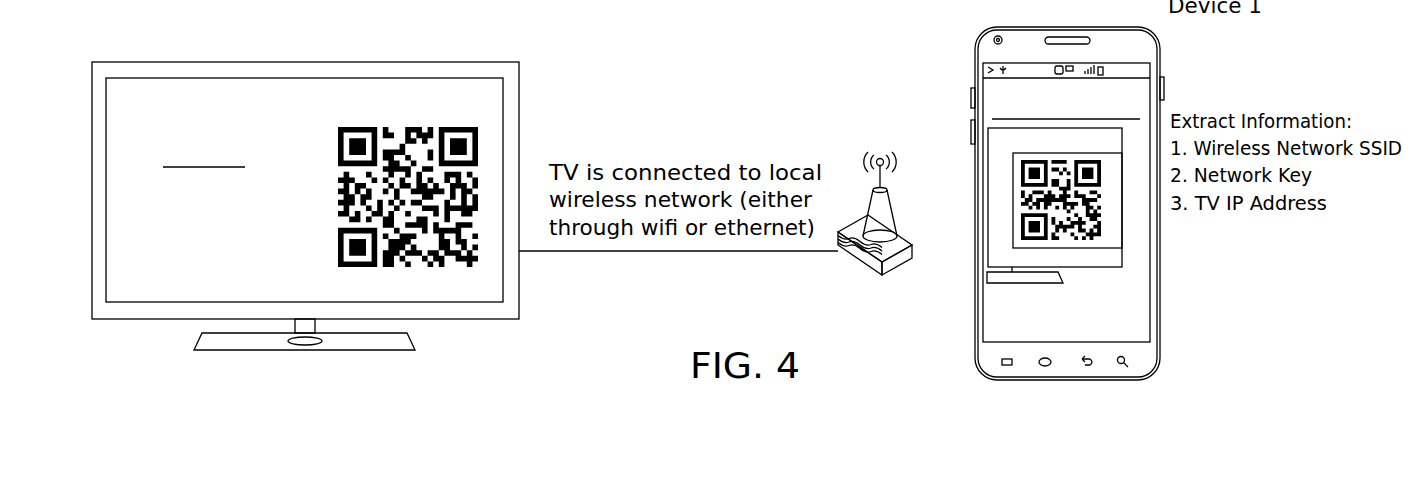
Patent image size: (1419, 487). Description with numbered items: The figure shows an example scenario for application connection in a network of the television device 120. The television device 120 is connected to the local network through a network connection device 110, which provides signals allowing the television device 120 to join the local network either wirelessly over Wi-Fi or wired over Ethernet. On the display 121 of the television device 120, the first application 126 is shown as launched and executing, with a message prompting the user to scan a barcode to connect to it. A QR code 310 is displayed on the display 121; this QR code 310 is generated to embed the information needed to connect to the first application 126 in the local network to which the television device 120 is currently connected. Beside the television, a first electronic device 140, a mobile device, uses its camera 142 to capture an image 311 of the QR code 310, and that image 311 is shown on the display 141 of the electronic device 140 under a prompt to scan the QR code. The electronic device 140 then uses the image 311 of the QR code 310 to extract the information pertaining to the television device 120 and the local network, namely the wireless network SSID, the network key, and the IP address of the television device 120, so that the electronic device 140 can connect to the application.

The network connection device 110 is at (864, 276).
The television device 120 is at (519, 78).
The display 121 is at (128, 278).
The application 1 126 is at (158, 156).
The QR code 310 is at (477, 158).
The electronic device 1 140 is at (1160, 53).
The display 141 is at (977, 298).
The camera 142 is at (975, 54).
The image 311 is at (1098, 219).